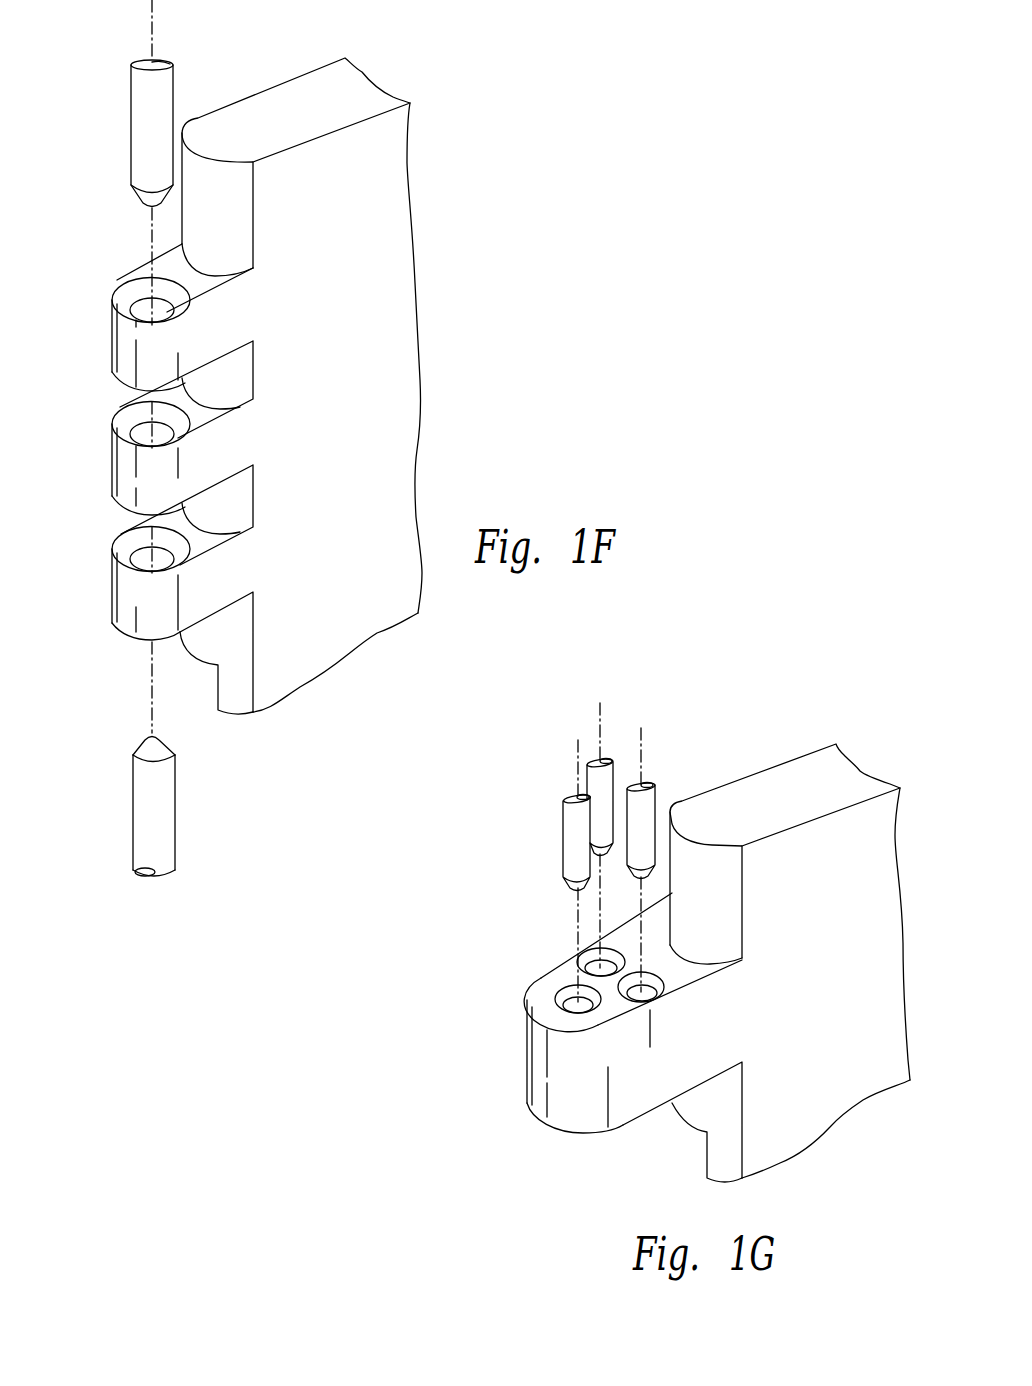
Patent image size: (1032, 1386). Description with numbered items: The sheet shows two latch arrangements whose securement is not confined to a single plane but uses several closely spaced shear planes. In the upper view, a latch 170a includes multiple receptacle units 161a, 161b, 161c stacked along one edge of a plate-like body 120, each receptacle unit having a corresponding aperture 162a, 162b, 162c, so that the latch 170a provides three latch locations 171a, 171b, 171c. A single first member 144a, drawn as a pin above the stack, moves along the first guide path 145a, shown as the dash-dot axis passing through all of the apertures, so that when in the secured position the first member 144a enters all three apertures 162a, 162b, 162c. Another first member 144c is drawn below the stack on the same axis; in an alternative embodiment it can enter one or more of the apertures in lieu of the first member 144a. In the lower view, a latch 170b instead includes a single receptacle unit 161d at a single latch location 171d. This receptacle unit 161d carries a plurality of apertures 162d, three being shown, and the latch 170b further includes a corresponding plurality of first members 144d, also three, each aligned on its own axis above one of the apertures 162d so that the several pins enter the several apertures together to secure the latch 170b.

In FIG. 1F, the plate 120 is at (275, 386).
In FIG. 1F, the first member 144a is at (135, 136).
In FIG. 1F, the first member 144c is at (138, 808).
In FIG. 1G, the first members 144d is at (577, 862).
In FIG. 1F, the first guide path 145a is at (150, 7).
In FIG. 1F, the receptacle unit 161a is at (184, 569).
In FIG. 1F, the receptacle unit 161b is at (184, 444).
In FIG. 1F, the receptacle unit 161c is at (180, 320).
In FIG. 1G, the receptacle unit 161d is at (553, 1066).
In FIG. 1F, the aperture 162a is at (168, 560).
In FIG. 1F, the aperture 162b is at (168, 435).
In FIG. 1F, the aperture 162c is at (168, 310).
In FIG. 1G, the apertures 162d is at (627, 992).
In FIG. 1F, the latch 170a is at (292, 215).
In FIG. 1G, the latch 170b is at (673, 765).
In FIG. 1F, the latch location 171a is at (265, 583).
In FIG. 1F, the latch location 171b is at (258, 447).
In FIG. 1F, the latch location 171c is at (253, 313).
In FIG. 1G, the latch location 171d is at (487, 1033).